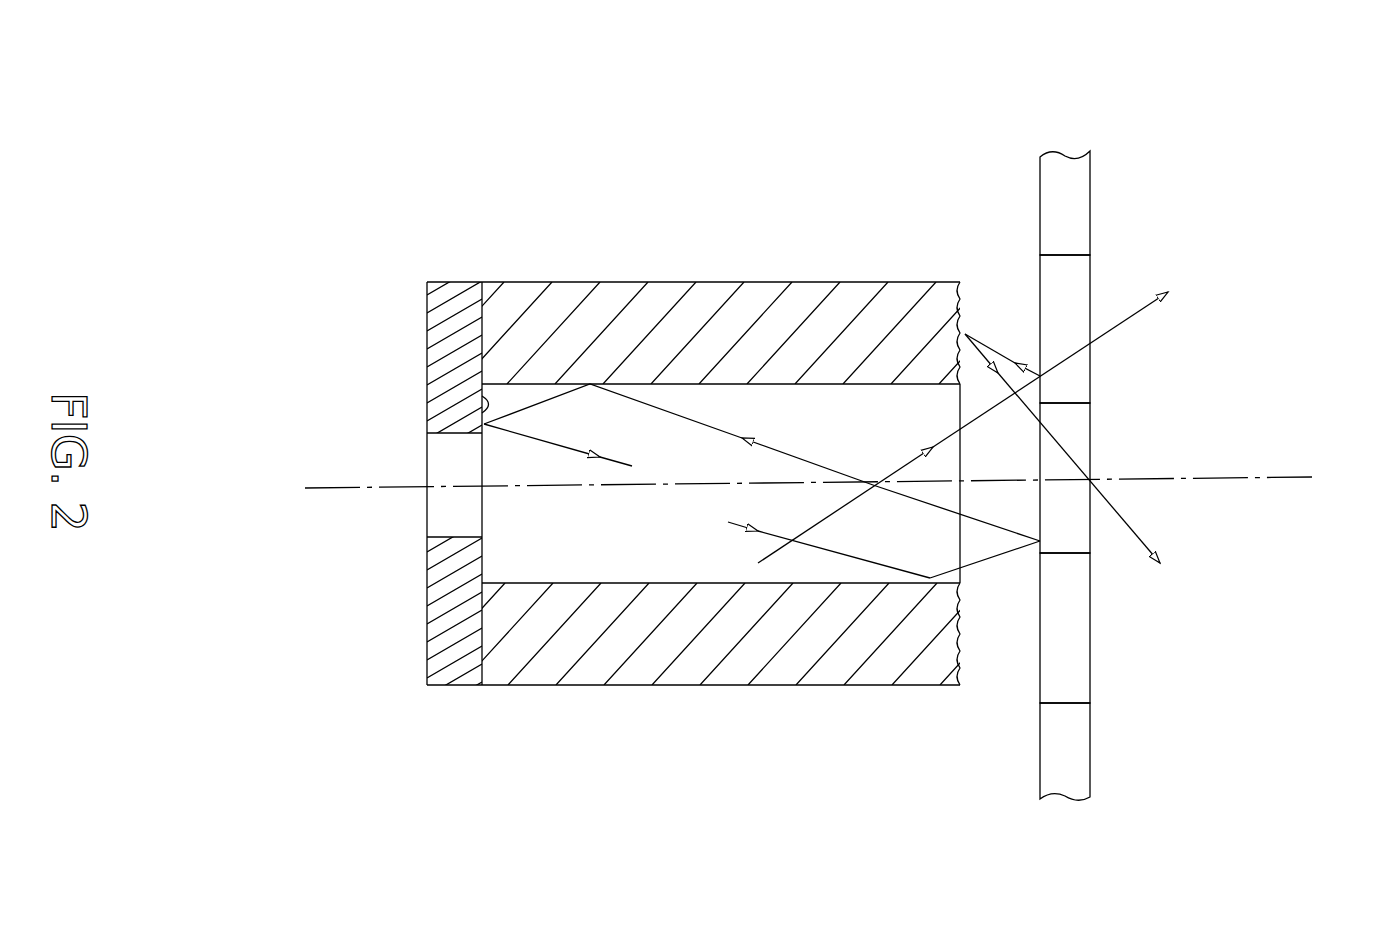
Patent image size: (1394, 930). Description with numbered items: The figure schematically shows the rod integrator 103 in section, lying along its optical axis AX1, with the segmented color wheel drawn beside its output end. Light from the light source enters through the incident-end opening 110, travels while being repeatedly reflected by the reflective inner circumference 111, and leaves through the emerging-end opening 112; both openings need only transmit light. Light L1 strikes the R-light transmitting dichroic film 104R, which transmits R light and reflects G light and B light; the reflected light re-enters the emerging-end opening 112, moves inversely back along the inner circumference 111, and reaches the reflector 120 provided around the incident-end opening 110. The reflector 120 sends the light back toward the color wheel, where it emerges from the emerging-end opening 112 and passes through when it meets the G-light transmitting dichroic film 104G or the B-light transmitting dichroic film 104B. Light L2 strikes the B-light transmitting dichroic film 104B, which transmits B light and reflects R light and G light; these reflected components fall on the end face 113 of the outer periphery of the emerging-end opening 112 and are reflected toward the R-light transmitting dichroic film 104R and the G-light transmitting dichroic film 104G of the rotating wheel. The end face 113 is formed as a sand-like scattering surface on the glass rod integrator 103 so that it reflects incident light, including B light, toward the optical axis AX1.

The rod integrator 103 is at (725, 433).
The incident-end opening 110 is at (427, 468).
The reflective inner circumference 111 is at (862, 384).
The emerging-end opening 112 is at (968, 497).
The end face 113 is at (963, 312).
The reflector 120 is at (486, 412).
The G-light transmitting dichroic film 104G is at (1092, 220).
The B-light transmitting dichroic film 104B is at (1092, 382).
The R-light transmitting dichroic film 104R is at (1092, 440).
The light L1 is at (737, 518).
The light L2 is at (847, 505).
The optical axis AX1 is at (1262, 476).